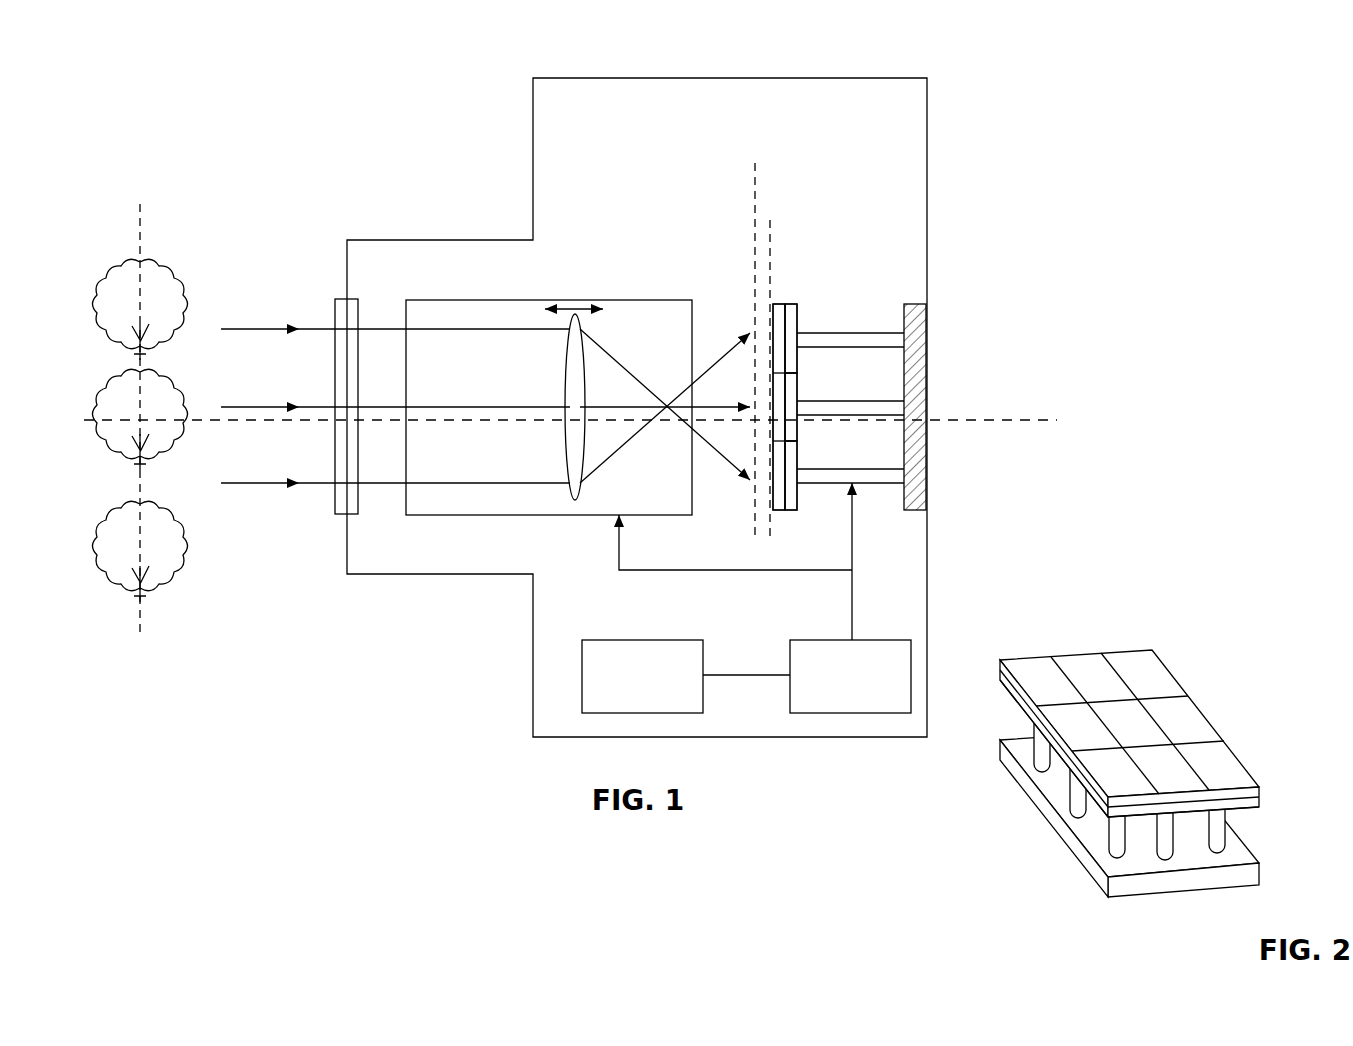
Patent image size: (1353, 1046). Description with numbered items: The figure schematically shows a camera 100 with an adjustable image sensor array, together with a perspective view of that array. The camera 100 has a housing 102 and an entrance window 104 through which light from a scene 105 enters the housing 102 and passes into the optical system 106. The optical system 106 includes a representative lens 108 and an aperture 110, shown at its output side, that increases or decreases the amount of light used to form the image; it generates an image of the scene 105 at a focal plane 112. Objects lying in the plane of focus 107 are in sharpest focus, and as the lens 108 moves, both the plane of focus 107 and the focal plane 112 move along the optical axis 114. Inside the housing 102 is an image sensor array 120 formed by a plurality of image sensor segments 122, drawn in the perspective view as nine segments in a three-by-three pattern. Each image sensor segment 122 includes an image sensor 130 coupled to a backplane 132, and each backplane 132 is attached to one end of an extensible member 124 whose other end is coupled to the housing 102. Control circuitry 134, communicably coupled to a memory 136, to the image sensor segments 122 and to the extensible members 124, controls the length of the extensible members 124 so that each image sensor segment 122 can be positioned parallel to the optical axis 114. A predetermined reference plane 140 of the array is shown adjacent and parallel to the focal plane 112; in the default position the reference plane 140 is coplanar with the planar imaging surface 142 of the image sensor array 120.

In FIG. 1, the camera 100 is at (358, 80).
In FIG. 1, the housing 102 is at (927, 163).
In FIG. 2, the housing 102 is at (1117, 898).
In FIG. 1, the entrance window 104 is at (343, 502).
In FIG. 1, the scene 105 is at (172, 241).
In FIG. 1, the optical system 106 is at (478, 300).
In FIG. 1, the plane of focus 107 is at (140, 612).
In FIG. 1, the lens 108 is at (578, 345).
In FIG. 1, the aperture 110 is at (683, 424).
In FIG. 1, the focal plane 112 is at (755, 185).
In FIG. 1, the optical axis 114 is at (1032, 420).
In FIG. 1, the image sensor array 120 is at (785, 305).
In FIG. 2, the image sensor array 120 is at (1170, 714).
In FIG. 1, the image sensor segments 122 is at (790, 316).
In FIG. 2, the image sensor segments 122 is at (1187, 710).
In FIG. 1, the extensible members 124 is at (885, 333).
In FIG. 2, the extensible members 124 is at (1163, 847).
In FIG. 2, the image sensor 130 is at (1260, 793).
In FIG. 2, the backplane 132 is at (1260, 805).
In FIG. 1, the control circuitry 134 is at (845, 640).
In FIG. 1, the memory 136 is at (652, 640).
In FIG. 1, the reference plane 140 is at (773, 512).
In FIG. 1, the imaging surface 142 is at (757, 310).